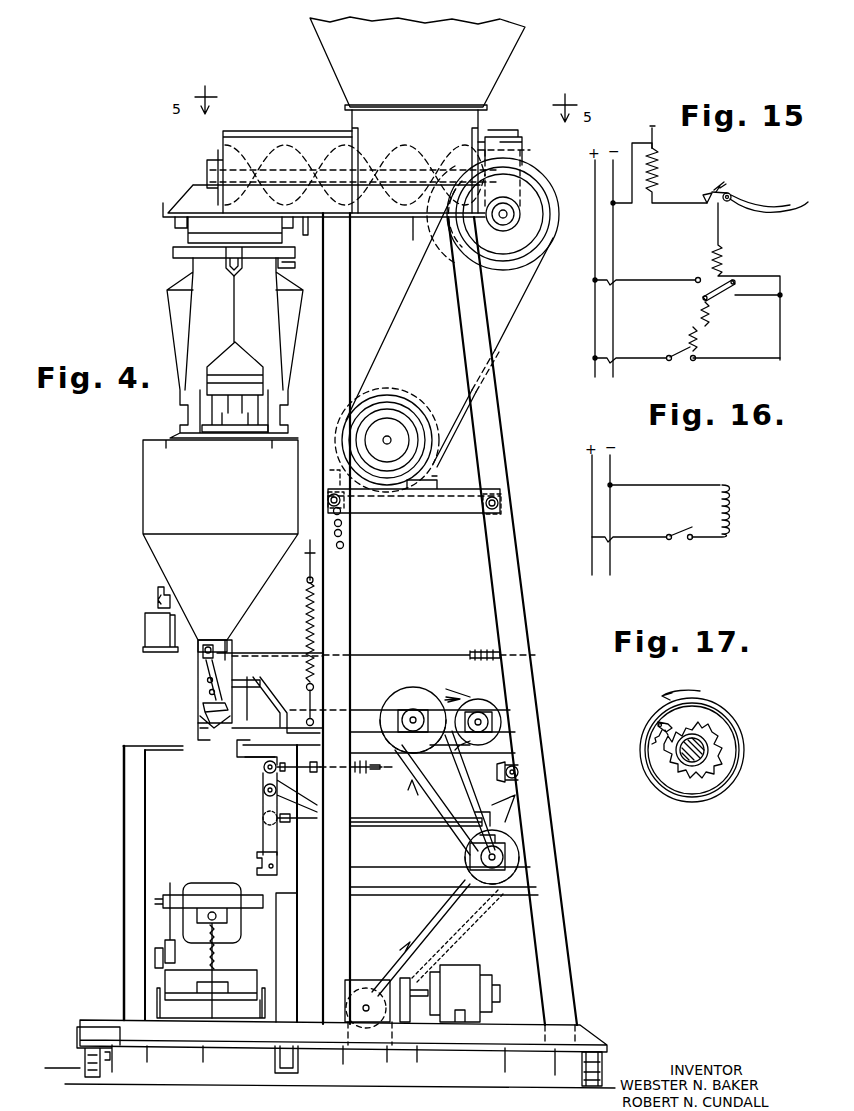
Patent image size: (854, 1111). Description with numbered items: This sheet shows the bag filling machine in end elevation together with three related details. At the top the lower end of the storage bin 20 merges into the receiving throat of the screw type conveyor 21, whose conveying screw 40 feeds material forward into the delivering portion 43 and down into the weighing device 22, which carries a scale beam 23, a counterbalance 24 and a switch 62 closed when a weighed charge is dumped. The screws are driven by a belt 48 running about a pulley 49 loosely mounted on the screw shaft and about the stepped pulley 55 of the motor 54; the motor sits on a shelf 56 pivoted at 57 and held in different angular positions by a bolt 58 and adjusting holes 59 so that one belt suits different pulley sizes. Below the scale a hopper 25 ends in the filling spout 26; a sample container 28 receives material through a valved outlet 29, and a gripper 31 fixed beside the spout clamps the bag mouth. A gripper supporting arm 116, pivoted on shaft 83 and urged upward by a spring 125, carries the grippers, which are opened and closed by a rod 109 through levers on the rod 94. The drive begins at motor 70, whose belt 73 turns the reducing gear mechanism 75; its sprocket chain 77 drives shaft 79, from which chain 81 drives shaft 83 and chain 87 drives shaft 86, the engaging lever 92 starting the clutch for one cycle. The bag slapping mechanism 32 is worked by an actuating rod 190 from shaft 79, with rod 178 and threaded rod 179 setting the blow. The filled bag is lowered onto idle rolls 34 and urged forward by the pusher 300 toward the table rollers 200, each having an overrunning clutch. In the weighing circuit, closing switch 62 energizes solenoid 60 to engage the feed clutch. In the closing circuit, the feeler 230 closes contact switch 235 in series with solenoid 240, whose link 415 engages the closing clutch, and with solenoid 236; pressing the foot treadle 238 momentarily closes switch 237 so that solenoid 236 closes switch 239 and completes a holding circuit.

In FIG. 4, the storage bin 20 is at (417, 63).
In FIG. 4, the screw type conveyor 21 is at (415, 161).
In FIG. 4, the delivering portion 43 is at (222, 141).
In FIG. 4, the conveying screw 40 is at (325, 145).
In FIG. 4, the scale beam 23 is at (170, 250).
In FIG. 4, the switch 62 is at (297, 265).
In FIG. 16, the switch 62 is at (670, 532).
In FIG. 4, the weighing device 22 is at (175, 318).
In FIG. 4, the counterbalance 24 is at (238, 355).
In FIG. 4, the hopper 25 is at (220, 546).
In FIG. 4, the valved outlet 29 is at (157, 598).
In FIG. 4, the sample container 28 is at (144, 626).
In FIG. 4, the filling spout 26 is at (197, 690).
In FIG. 4, the gripper 31 is at (187, 724).
In FIG. 4, the spring 125 is at (308, 625).
In FIG. 4, the belt 48 is at (512, 320).
In FIG. 4, the pulley 49 is at (508, 260).
In FIG. 4, the motor 54 is at (385, 393).
In FIG. 4, the stepped pulley 55 is at (403, 420).
In FIG. 4, the shelf 56 is at (422, 510).
In FIG. 4, the pivot 57 is at (503, 498).
In FIG. 4, the bolt 58 is at (342, 500).
In FIG. 4, the adjusting holes 59 is at (344, 544).
In FIG. 4, the rod 109 is at (370, 653).
In FIG. 4, the gripper supporting arm 116 is at (358, 712).
In FIG. 4, the shaft 83 is at (425, 700).
In FIG. 4, the shaft 86 is at (496, 715).
In FIG. 4, the chain 87 is at (466, 698).
In FIG. 4, the threaded rod 179 is at (365, 770).
In FIG. 4, the rod 94 is at (516, 769).
In FIG. 4, the chain 81 is at (428, 800).
In FIG. 4, the actuating rod 190 is at (384, 822).
In FIG. 4, the shaft 79 is at (512, 850).
In FIG. 4, the sprocket chain 77 is at (395, 927).
In FIG. 4, the reducing gear mechanism 75 is at (354, 990).
In FIG. 4, the belt 73 is at (405, 978).
In FIG. 4, the motor 70 is at (462, 968).
In FIG. 4, the engaging lever 92 is at (236, 752).
In FIG. 4, the rod 178 is at (262, 775).
In FIG. 4, the bag slapping mechanism 32 is at (250, 852).
In FIG. 4, the pusher 300 is at (196, 883).
In FIG. 4, the idle rolls 34 is at (177, 972).
In FIG. 4, the foot treadle 238 is at (85, 1027).
In FIG. 15, the link 415 is at (650, 128).
In FIG. 15, the solenoid 240 is at (658, 165).
In FIG. 15, the contact switch 235 is at (705, 192).
In FIG. 15, the feeler 230 is at (760, 207).
In FIG. 15, the solenoid 236 is at (724, 260).
In FIG. 15, the switch 239 is at (718, 300).
In FIG. 15, the switch 237 is at (672, 352).
In FIG. 16, the solenoid 60 is at (732, 508).
In FIG. 17, the rollers 200 is at (722, 722).